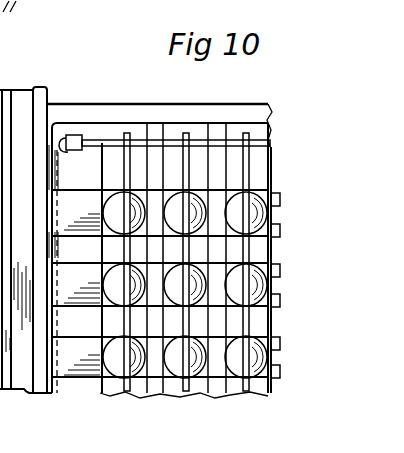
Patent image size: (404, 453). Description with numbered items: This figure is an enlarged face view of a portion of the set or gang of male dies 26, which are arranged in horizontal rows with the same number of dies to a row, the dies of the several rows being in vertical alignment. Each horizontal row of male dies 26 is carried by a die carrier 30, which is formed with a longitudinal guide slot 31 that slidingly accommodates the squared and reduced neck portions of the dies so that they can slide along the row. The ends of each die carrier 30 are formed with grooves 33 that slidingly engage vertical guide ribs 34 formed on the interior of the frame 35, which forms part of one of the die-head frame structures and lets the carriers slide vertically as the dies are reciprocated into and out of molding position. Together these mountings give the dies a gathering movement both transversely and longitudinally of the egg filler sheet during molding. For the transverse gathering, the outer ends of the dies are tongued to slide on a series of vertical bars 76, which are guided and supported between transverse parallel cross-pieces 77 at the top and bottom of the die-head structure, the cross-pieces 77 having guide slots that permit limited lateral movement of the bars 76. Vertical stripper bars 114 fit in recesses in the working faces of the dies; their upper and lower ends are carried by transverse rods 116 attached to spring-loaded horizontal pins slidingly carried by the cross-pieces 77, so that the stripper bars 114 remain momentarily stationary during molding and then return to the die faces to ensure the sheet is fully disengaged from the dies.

The frame 35 is at (80, 112).
The cross-pieces 77 is at (224, 110).
The vertical bars 76 is at (237, 385).
The grooves 33 is at (62, 284).
The vertical guide ribs 34 is at (58, 180).
The transverse rods 116 is at (274, 145).
The stripper bars 114 is at (187, 133).
The male dies 26 is at (253, 192).
The longitudinal guide slot 31 is at (277, 213).
The die carrier 30 is at (275, 268).